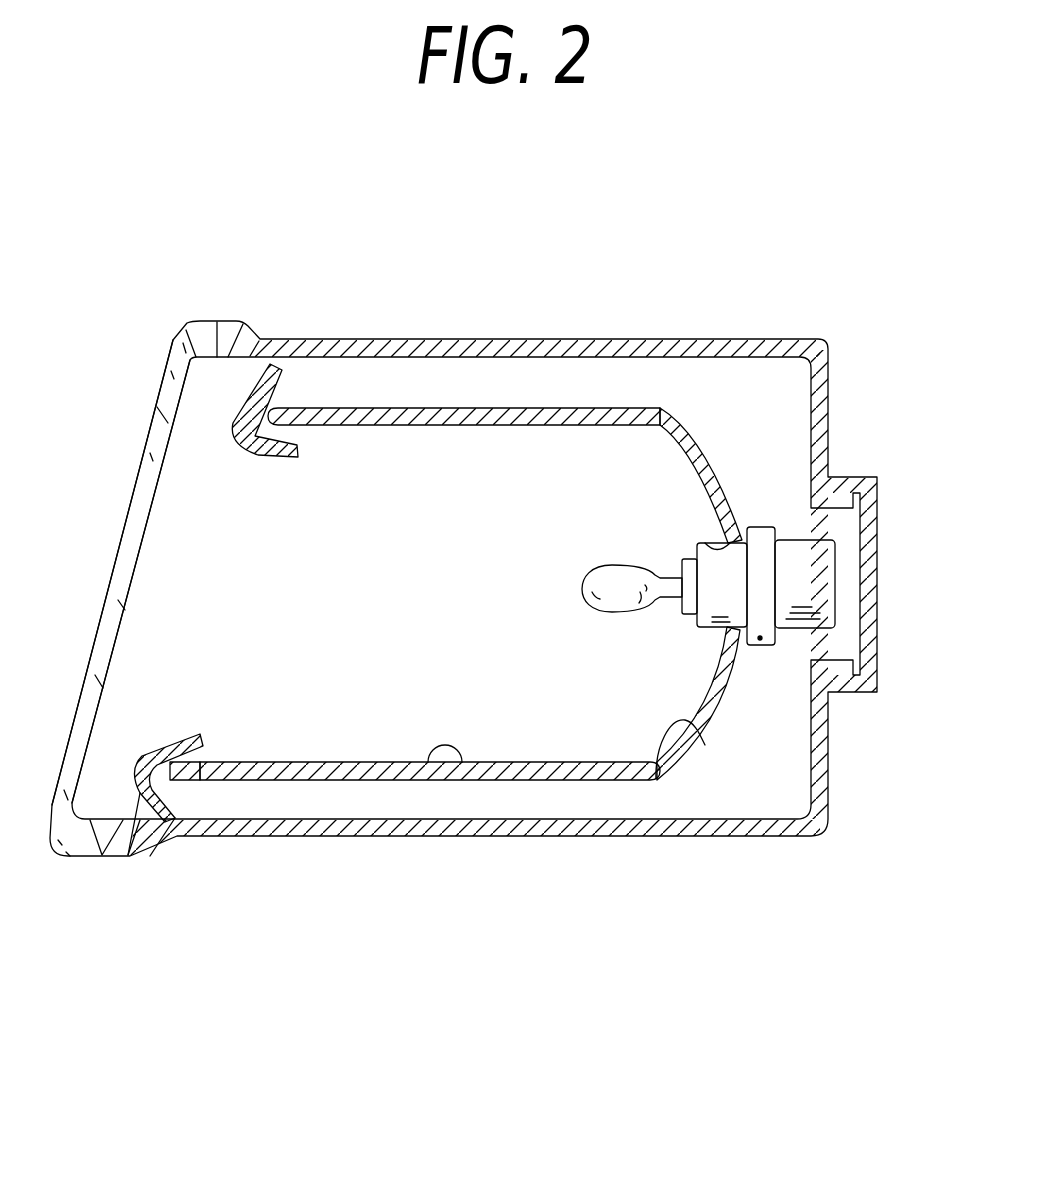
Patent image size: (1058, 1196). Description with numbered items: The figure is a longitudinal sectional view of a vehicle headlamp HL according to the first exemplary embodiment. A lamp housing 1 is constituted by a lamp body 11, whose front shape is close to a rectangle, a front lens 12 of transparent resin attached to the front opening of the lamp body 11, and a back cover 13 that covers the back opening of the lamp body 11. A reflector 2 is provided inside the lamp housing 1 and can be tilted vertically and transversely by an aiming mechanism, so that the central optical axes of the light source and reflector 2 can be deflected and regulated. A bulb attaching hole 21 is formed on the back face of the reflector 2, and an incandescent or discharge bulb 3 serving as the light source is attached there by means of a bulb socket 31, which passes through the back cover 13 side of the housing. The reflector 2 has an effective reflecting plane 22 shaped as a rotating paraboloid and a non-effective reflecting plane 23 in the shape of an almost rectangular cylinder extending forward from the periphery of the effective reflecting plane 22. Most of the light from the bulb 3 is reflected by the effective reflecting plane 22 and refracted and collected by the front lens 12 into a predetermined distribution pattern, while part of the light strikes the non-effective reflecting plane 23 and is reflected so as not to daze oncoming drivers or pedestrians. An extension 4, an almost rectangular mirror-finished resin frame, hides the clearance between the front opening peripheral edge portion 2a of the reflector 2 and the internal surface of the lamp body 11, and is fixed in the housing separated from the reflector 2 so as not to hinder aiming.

The headlamp HL is at (600, 327).
The lamp housing 1 is at (830, 412).
The lamp body 11 is at (477, 347).
The front lens 12 is at (180, 331).
The back cover 13 is at (870, 655).
The extension 4 is at (255, 394).
The reflector 2 is at (702, 740).
The front opening peripheral edge portion 2a is at (197, 833).
The bulb attaching hole 21 is at (707, 540).
The effective reflecting plane 22 is at (648, 780).
The non-effective reflecting plane 23 is at (460, 757).
The bulb 3 is at (618, 565).
The bulb socket 31 is at (813, 585).